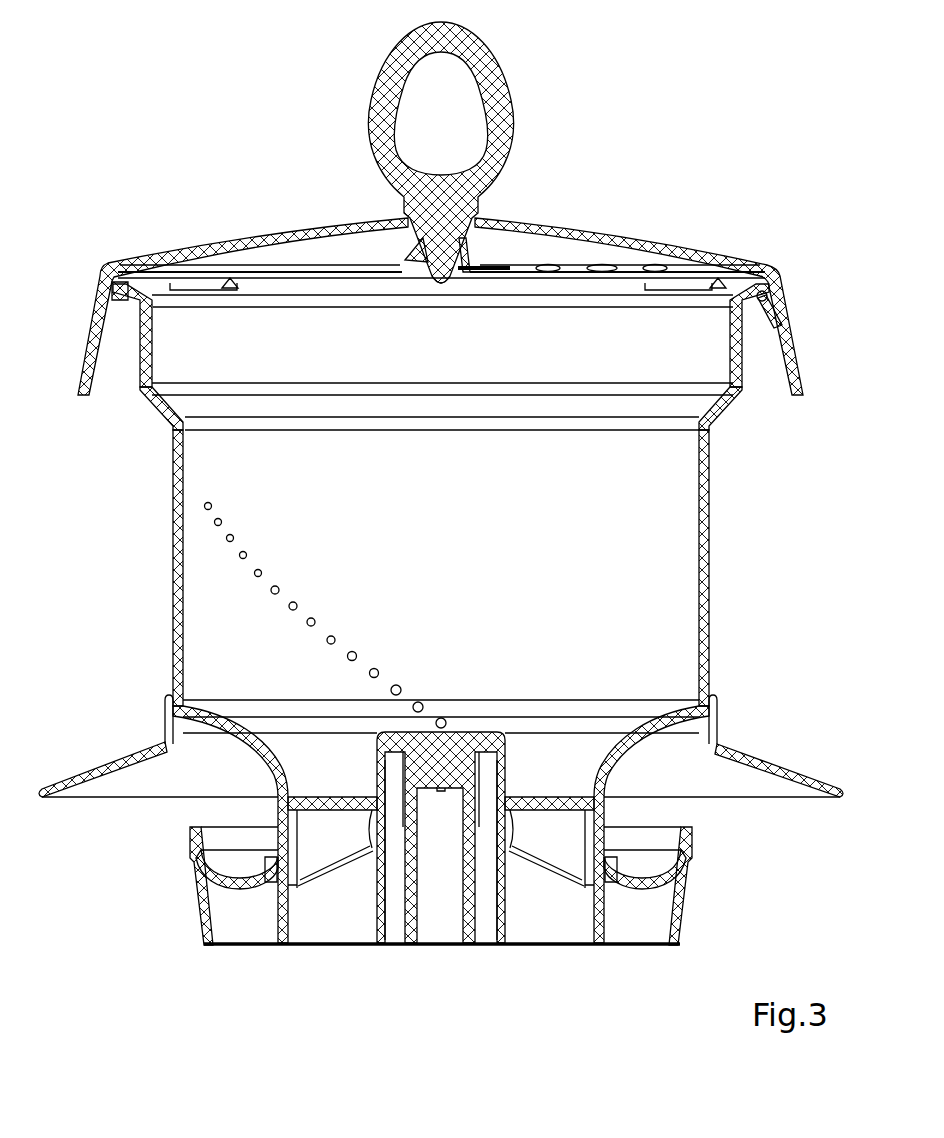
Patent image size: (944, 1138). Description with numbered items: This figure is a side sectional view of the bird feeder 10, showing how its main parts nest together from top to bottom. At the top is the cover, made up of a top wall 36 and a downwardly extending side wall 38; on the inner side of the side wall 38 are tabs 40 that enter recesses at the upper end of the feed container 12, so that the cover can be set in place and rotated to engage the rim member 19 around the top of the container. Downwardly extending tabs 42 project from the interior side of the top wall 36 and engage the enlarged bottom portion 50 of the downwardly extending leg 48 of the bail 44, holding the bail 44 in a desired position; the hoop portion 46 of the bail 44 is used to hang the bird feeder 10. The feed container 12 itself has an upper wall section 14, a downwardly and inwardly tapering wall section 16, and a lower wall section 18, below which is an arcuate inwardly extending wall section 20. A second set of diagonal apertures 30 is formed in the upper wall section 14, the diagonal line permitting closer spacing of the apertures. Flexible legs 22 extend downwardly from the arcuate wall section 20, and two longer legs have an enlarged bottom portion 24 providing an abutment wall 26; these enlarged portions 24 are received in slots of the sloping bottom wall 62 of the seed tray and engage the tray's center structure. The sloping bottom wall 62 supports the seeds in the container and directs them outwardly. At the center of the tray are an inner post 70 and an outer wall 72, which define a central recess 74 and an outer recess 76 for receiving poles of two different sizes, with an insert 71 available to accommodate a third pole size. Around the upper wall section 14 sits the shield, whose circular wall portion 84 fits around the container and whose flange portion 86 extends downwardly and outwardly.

The bird feeder 10 is at (214, 166).
The feed container 12 is at (157, 571).
The upper wall section 14 is at (140, 340).
The downwardly and inwardly tapering wall section 16 is at (163, 417).
The lower wall section 18 is at (175, 647).
The rim member 19 is at (133, 290).
The arcuate inwardly extending wall section 20 is at (215, 737).
The flexible legs 22 is at (276, 805).
The enlarged bottom portion 24 is at (267, 915).
The abutment wall 26 is at (300, 888).
The second set of diagonal apertures 30 is at (298, 605).
The top wall 36 is at (640, 237).
The downwardly extending side wall 38 is at (785, 338).
The tabs 40 is at (763, 300).
The downwardly extending tabs 42 is at (413, 256).
The bail 44 is at (358, 83).
The hoop portion 46 is at (497, 100).
The downwardly extending leg 48 is at (447, 238).
The enlarged bottom portion 50 is at (438, 286).
The sloping bottom wall 62 is at (323, 862).
The inner post 70 is at (464, 943).
The insert 71 is at (483, 772).
The outer wall 72 is at (499, 944).
The central recess 74 is at (440, 944).
The outer recess 76 is at (395, 944).
The circular wall portion 84 is at (718, 714).
The flange portion 86 is at (805, 775).